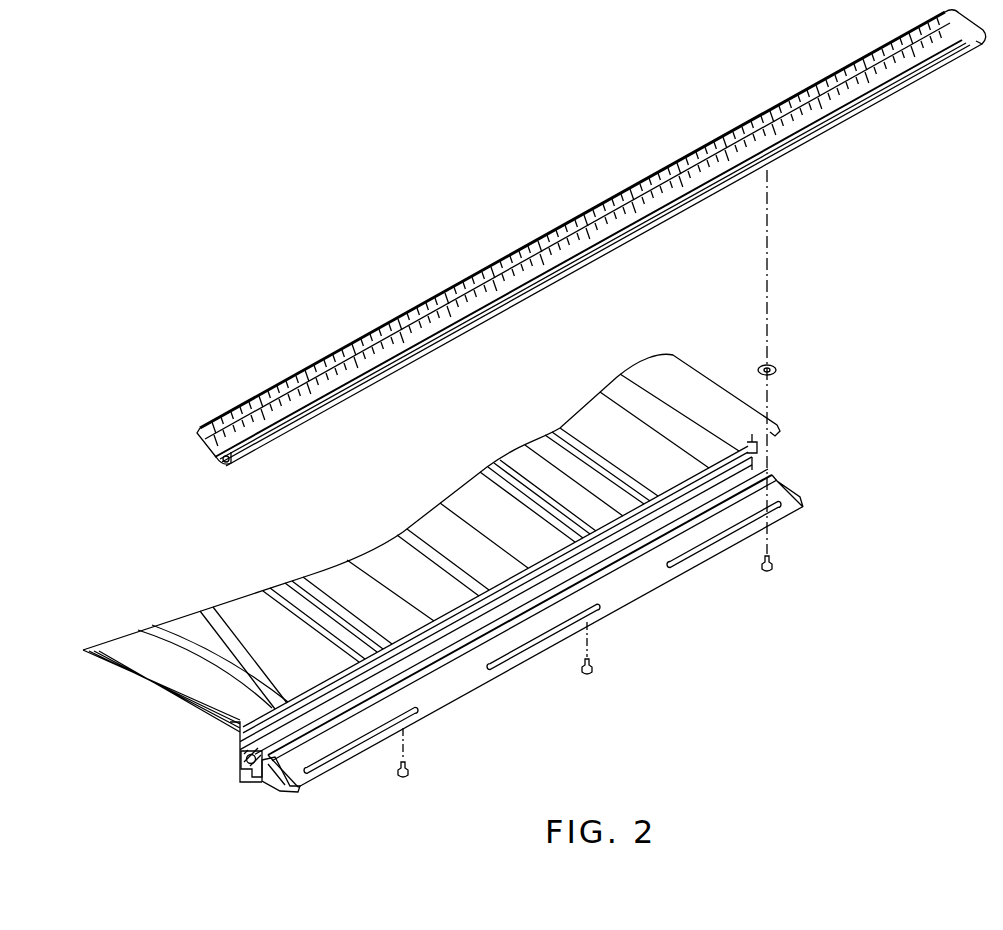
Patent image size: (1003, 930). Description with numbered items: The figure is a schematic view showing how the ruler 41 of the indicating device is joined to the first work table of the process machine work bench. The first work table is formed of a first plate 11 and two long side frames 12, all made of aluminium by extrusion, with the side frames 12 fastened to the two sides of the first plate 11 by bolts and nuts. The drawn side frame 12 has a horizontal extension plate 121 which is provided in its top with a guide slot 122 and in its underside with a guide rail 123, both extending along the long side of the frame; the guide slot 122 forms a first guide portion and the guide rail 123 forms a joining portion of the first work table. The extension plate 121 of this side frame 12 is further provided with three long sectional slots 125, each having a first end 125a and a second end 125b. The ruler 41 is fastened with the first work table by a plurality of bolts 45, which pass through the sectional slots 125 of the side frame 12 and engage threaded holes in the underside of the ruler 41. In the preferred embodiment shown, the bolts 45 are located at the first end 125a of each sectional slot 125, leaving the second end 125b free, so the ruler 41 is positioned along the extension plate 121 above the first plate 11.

The first plate 11 is at (182, 618).
The side frame 12 is at (493, 672).
The horizontal extension plate 121 is at (647, 575).
The guide slot 122 is at (266, 774).
The guide rail 123 is at (276, 782).
The sectional slot 125 is at (355, 749).
The first end 125a is at (617, 607).
The second end 125b is at (490, 668).
The ruler 41 is at (296, 382).
The bolt 45 is at (590, 678).